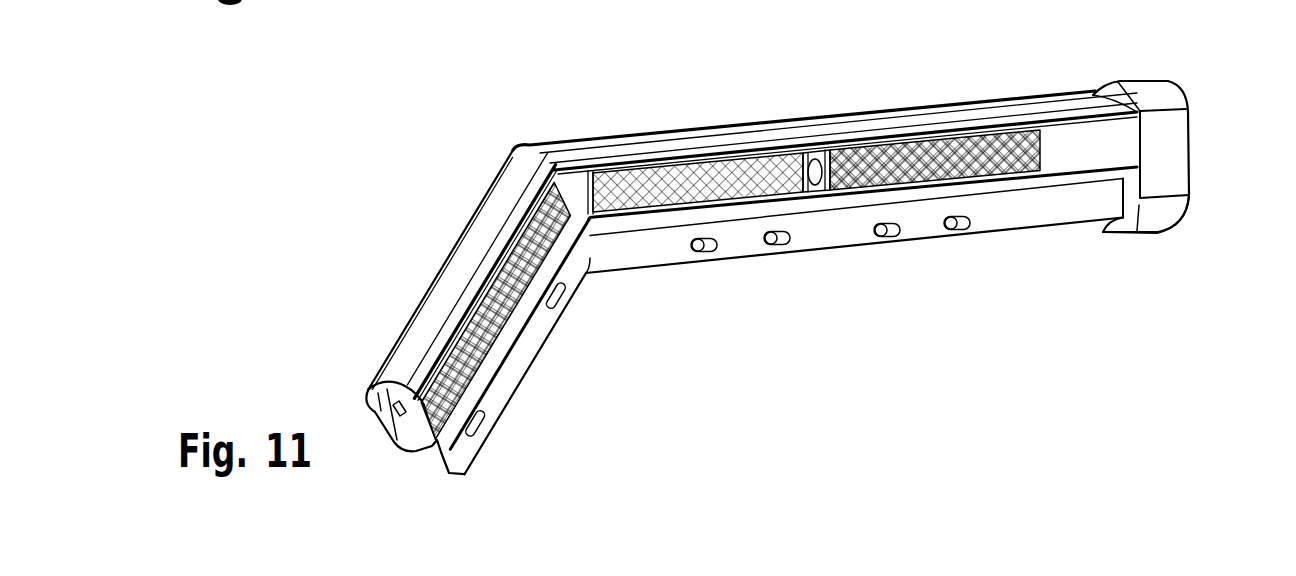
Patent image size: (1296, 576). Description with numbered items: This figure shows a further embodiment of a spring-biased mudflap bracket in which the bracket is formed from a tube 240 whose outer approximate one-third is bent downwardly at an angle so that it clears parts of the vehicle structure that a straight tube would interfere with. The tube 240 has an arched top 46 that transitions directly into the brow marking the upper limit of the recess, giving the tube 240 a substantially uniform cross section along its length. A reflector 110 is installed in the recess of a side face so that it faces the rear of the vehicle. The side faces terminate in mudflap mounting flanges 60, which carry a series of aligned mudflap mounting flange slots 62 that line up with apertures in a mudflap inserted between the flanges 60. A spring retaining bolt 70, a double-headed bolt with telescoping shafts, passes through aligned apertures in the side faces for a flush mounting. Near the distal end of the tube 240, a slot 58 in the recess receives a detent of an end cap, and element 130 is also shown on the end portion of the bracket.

The arched top 46 is at (1068, 104).
The tube 240 is at (610, 145).
The reflector 110 is at (515, 267).
The spring retaining bolt 70 is at (808, 186).
The mudflap mounting flange 60 is at (1018, 223).
The mudflap mounting flange slots 62 is at (895, 233).
The end cap base 130 is at (1137, 203).
The slot 58 is at (387, 400).